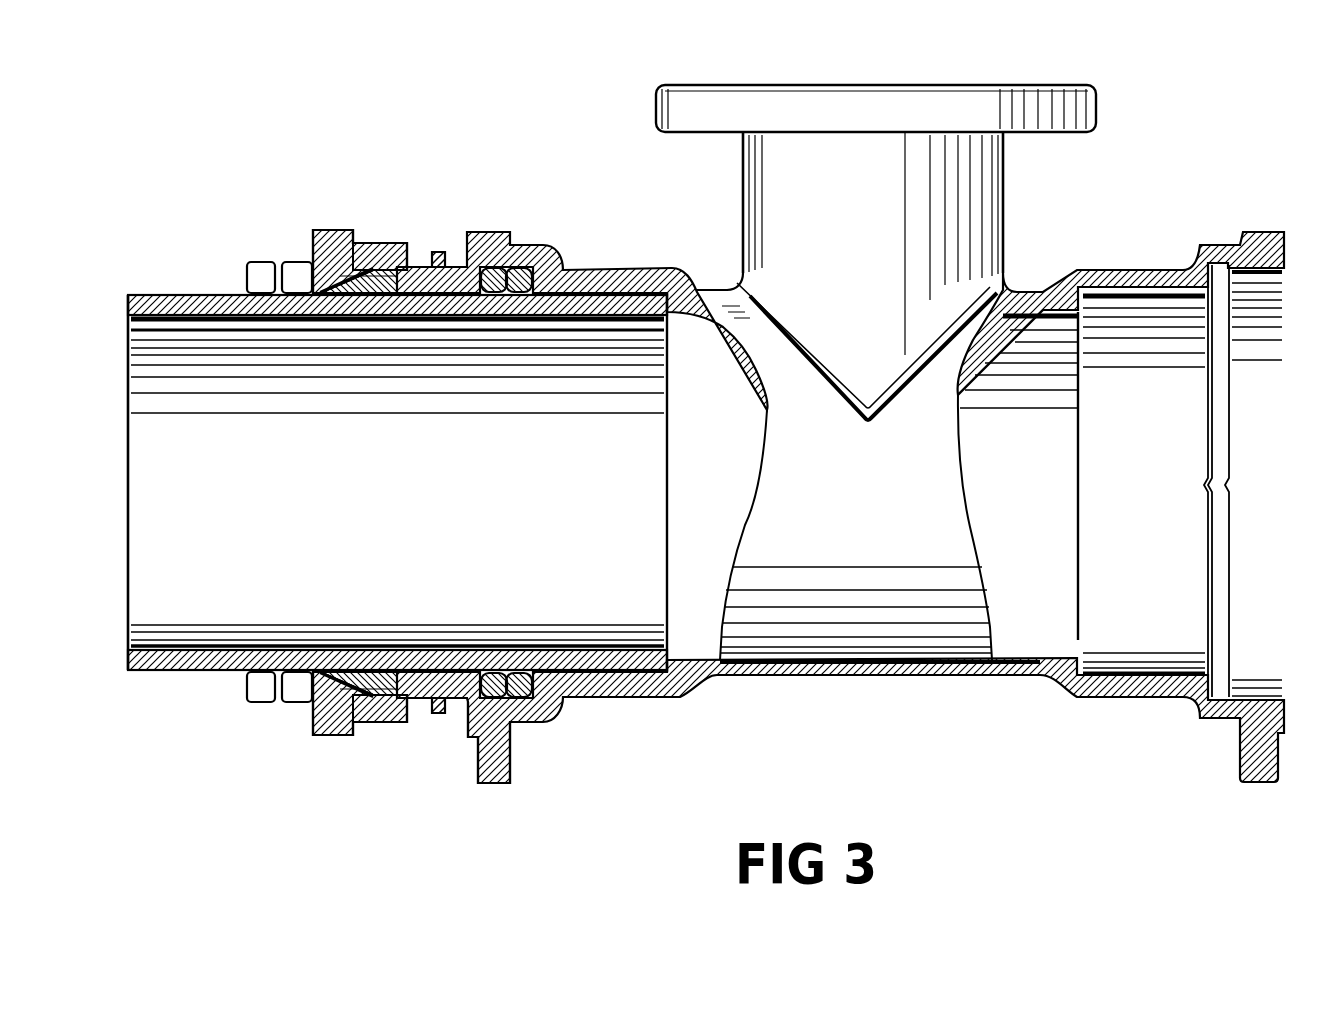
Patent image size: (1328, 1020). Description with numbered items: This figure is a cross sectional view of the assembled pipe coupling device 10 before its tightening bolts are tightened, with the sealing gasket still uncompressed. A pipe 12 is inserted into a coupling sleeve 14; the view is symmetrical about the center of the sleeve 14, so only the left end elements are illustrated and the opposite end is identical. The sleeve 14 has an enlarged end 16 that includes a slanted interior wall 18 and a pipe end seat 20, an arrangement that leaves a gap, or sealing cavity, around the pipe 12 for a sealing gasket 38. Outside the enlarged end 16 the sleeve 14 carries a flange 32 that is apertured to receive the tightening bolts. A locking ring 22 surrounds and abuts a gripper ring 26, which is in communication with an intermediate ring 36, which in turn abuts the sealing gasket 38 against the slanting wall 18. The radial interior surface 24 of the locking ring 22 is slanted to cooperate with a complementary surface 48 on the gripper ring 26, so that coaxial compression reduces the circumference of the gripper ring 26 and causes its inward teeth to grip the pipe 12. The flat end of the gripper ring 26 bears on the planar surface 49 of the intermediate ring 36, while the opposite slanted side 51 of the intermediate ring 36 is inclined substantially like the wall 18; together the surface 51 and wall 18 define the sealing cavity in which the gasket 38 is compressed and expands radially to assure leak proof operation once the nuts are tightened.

The pipe coupling device 10 is at (1187, 146).
The pipe 12 is at (208, 662).
The coupling sleeve 14 is at (890, 600).
The enlarged end 16 is at (533, 713).
The slanted interior wall 18 is at (530, 678).
The pipe end seat 20 is at (660, 662).
The locking ring 22 is at (327, 703).
The radial interior surface 24 is at (340, 683).
The gripper ring 26 is at (380, 695).
The flange 32 is at (493, 765).
The intermediate ring 36 is at (442, 713).
The sealing gasket 38 is at (498, 678).
The complementary surface 48 is at (343, 702).
The planar surface 49 is at (397, 695).
The slanted side 51 is at (488, 700).